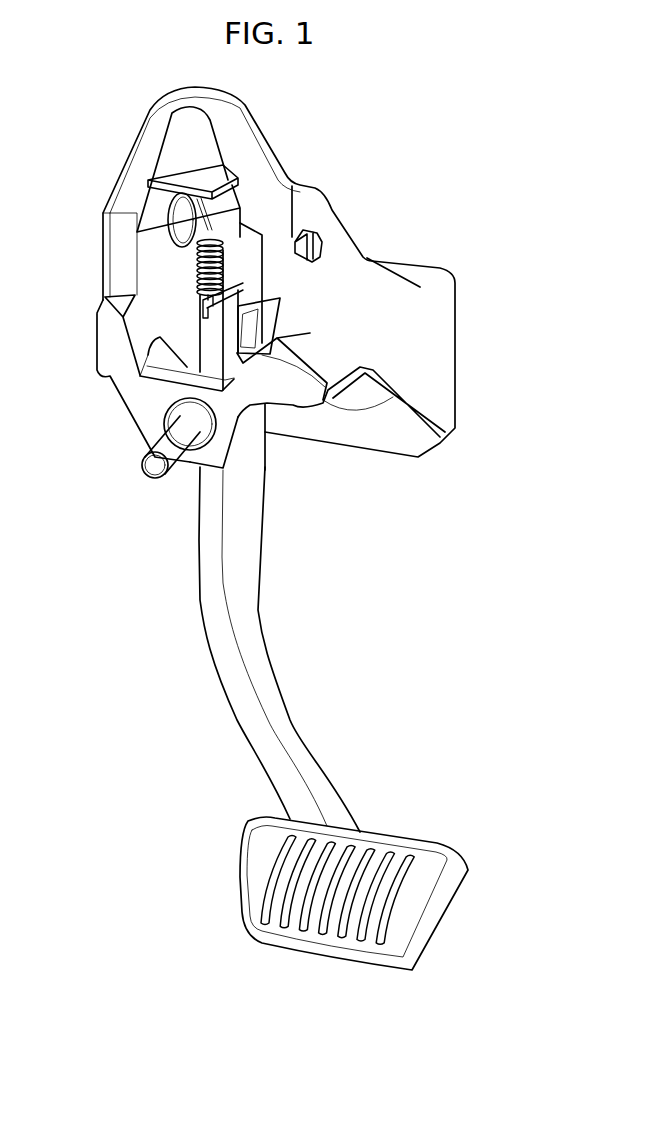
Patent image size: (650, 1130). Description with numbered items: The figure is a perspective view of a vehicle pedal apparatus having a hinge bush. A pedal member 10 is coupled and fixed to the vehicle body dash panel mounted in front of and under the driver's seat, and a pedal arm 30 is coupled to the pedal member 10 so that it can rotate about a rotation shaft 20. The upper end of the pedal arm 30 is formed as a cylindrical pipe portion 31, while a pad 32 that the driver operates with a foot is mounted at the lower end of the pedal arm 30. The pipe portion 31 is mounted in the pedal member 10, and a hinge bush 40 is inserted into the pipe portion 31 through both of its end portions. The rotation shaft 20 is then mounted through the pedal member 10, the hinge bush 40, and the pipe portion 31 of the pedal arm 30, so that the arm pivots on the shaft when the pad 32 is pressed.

The pedal member 10 is at (437, 350).
The rotation shaft 20 is at (320, 250).
The pedal arm 30 is at (212, 608).
The pipe portion 31 is at (185, 222).
The pad 32 is at (263, 886).
The hinge bush 40 is at (168, 245).